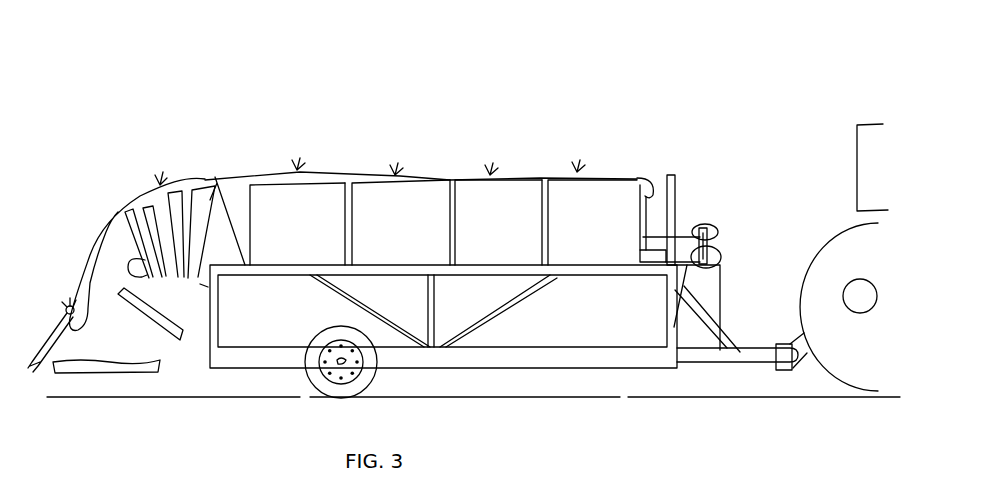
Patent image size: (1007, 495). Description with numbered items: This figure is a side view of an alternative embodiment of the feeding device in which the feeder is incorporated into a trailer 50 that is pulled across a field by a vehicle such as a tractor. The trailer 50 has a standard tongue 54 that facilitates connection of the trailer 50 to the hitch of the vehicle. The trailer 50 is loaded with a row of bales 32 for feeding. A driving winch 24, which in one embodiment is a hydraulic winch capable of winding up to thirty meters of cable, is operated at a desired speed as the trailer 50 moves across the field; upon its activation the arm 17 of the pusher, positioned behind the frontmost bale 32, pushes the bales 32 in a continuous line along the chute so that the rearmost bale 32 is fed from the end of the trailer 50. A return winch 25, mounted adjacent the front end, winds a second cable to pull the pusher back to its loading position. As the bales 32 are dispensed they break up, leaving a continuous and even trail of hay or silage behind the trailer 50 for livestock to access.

The trailer 50 is at (578, 140).
The bales 32 is at (210, 200).
The arm 17 is at (645, 218).
The return winch 25 is at (713, 232).
The driving winch 24 is at (717, 253).
The tongue 54 is at (750, 347).